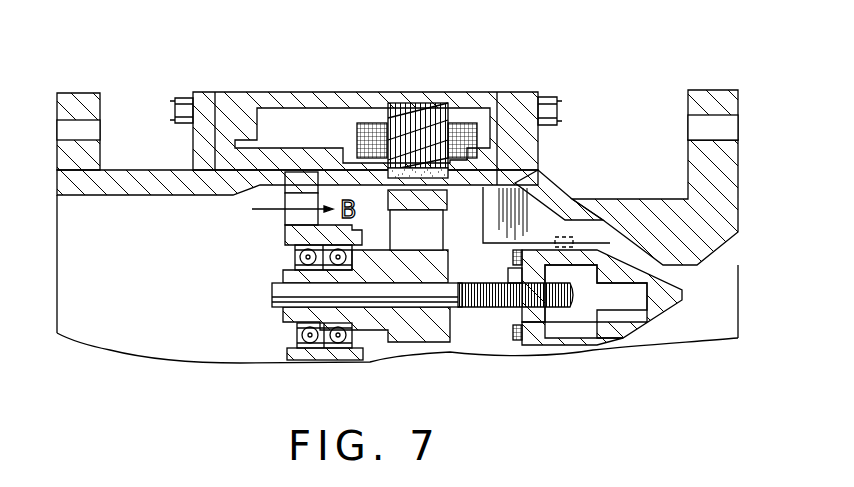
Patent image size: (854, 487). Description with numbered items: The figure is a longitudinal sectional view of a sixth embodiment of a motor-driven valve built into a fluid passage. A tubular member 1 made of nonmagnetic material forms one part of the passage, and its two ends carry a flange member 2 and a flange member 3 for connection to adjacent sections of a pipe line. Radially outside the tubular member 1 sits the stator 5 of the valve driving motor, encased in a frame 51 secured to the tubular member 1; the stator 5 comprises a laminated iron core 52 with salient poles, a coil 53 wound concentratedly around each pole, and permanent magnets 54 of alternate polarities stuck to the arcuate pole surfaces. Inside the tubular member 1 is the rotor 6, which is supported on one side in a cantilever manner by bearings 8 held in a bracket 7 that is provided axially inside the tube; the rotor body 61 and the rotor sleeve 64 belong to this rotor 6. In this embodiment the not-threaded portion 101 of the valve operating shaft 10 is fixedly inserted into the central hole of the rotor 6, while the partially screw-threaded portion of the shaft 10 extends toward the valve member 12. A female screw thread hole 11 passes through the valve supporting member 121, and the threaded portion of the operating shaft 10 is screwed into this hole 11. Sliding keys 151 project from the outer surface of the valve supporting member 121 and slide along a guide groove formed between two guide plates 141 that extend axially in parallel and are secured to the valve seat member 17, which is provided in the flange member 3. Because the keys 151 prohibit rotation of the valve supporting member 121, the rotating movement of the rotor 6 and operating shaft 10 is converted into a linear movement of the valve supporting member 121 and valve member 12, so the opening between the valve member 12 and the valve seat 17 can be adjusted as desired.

The tubular member 1 is at (488, 140).
The flange member 2 is at (75, 93).
The flange member 3 is at (712, 90).
The stator 5 is at (467, 120).
The frame 51 is at (296, 92).
The laminated iron core 52 is at (412, 107).
The coil 53 is at (365, 123).
The permanent magnets 54 is at (385, 172).
The rotor 6 is at (450, 330).
The rotor body 61 is at (415, 340).
The rotor sleeve 64 is at (444, 196).
The bracket 7 is at (297, 175).
The bearings 8 is at (300, 333).
The valve operating shaft 10 is at (467, 307).
The not-threaded portion 101 is at (466, 274).
The female screw thread hole 11 is at (560, 282).
The valve member 12 is at (668, 298).
The valve supporting member 121 is at (543, 345).
The guide plates 141 is at (542, 213).
The sliding keys 151 is at (565, 240).
The valve seat 17 is at (710, 243).